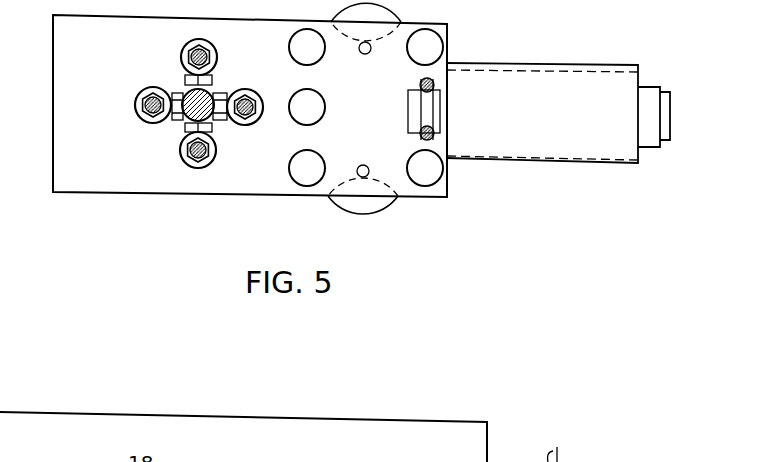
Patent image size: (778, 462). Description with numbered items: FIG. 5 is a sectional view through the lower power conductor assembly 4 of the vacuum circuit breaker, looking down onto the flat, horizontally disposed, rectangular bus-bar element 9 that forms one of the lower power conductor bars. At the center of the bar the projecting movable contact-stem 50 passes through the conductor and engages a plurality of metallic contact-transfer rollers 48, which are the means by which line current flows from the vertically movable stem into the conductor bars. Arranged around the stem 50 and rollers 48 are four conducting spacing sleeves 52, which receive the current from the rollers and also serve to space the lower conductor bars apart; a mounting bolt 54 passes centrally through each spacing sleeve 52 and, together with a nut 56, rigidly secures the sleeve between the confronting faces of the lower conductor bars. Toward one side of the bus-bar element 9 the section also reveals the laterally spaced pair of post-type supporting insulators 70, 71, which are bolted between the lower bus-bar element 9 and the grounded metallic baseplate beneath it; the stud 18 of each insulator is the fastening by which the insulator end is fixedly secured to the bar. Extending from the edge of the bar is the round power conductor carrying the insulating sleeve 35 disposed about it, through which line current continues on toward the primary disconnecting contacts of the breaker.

The bus-bar element 9 is at (255, 196).
The insulating sleeve 35 is at (524, 44).
The lower power conductor assembly 4 is at (510, 160).
The post-type supporting insulator 71 is at (400, 20).
The post-type supporting insulator 70 is at (394, 205).
The stud 18 is at (363, 54).
The movable contact-stem 50 is at (187, 92).
The contact-transfer roller 48 is at (213, 85).
The mounting bolt 54 is at (184, 140).
The conducting spacing sleeve 52 is at (175, 33).
The nut 56 is at (155, 92).